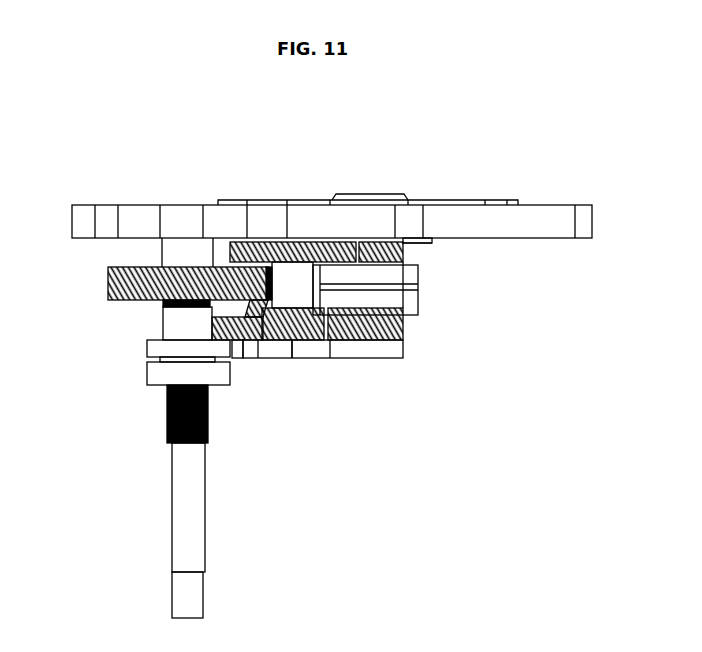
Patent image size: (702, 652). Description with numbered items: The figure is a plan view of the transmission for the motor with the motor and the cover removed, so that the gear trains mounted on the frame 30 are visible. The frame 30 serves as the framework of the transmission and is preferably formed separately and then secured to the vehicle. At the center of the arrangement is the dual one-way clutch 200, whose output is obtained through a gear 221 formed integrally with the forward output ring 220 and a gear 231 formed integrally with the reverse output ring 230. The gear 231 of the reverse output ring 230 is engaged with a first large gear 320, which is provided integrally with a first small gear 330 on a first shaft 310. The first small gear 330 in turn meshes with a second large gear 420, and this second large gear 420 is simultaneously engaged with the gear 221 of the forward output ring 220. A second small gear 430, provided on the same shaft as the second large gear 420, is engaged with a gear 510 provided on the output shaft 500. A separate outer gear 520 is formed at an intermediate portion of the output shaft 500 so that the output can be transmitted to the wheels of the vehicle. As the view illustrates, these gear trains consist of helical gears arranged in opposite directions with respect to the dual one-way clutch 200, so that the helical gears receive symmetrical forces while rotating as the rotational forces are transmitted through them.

The frame 30 is at (525, 223).
The second small gear 430 is at (207, 243).
The gear 510 is at (133, 300).
The first large gear 320 is at (285, 252).
The first shaft 310 is at (298, 277).
The reverse output ring 230 is at (408, 275).
The gear 231 is at (418, 250).
The dual one-way clutch 200 is at (446, 296).
The forward output ring 220 is at (412, 305).
The gear 221 is at (403, 333).
The first small gear 330 is at (298, 360).
The second large gear 420 is at (240, 340).
The outer gear 520 is at (167, 415).
The output shaft 500 is at (190, 592).